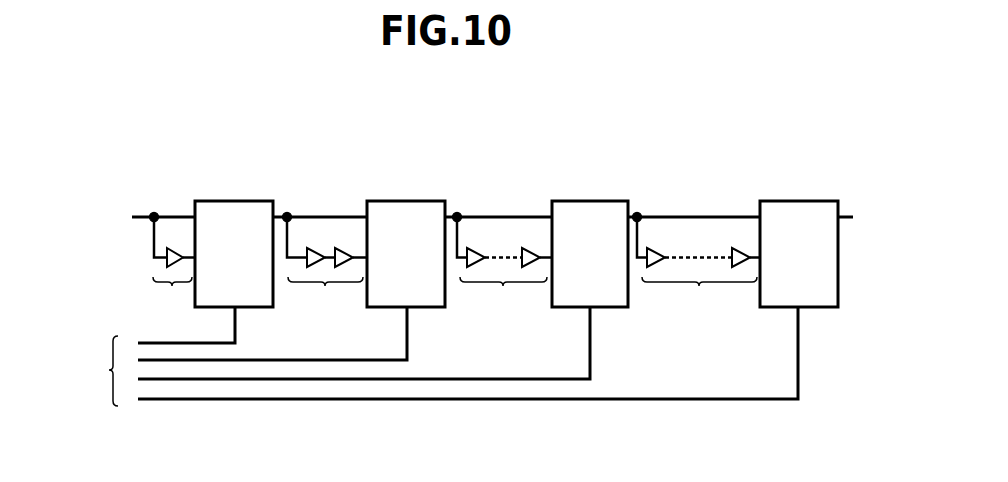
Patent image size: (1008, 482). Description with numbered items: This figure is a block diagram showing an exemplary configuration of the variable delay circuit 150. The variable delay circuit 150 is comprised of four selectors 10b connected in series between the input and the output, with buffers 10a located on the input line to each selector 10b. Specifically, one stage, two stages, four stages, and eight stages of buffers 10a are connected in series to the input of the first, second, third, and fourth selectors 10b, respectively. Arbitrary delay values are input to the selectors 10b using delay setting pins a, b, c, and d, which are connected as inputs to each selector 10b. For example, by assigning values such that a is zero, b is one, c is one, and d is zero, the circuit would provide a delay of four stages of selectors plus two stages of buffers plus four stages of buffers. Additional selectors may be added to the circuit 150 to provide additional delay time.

The variable delay circuit 150 is at (234, 121).
The buffer 10a is at (455, 240).
The selector 10b is at (234, 201).